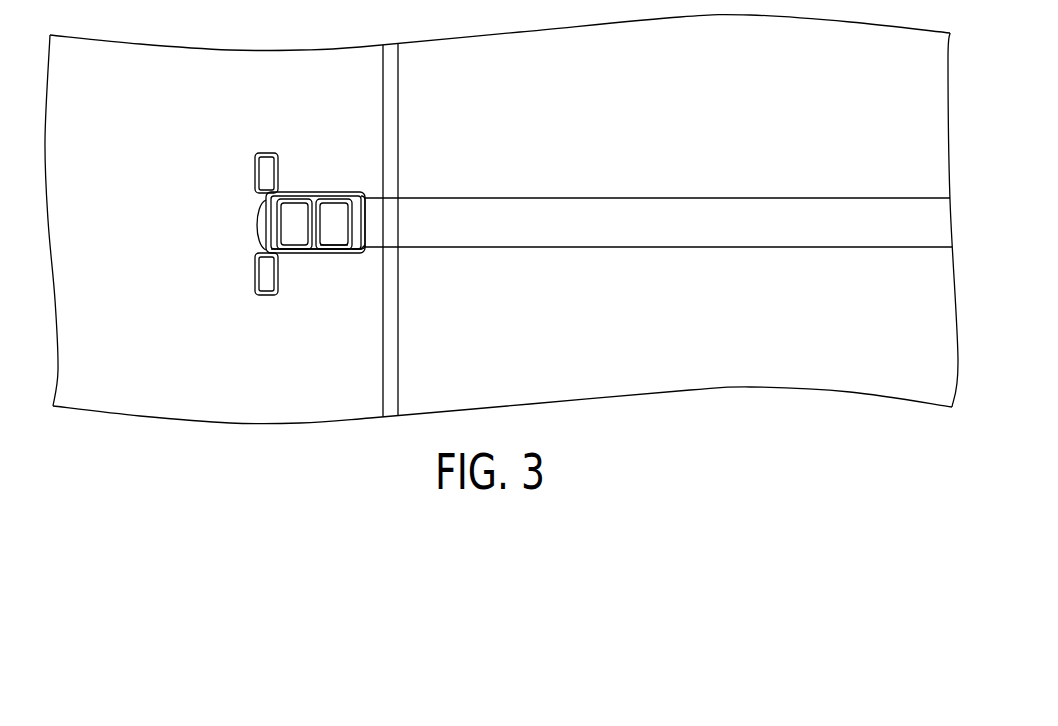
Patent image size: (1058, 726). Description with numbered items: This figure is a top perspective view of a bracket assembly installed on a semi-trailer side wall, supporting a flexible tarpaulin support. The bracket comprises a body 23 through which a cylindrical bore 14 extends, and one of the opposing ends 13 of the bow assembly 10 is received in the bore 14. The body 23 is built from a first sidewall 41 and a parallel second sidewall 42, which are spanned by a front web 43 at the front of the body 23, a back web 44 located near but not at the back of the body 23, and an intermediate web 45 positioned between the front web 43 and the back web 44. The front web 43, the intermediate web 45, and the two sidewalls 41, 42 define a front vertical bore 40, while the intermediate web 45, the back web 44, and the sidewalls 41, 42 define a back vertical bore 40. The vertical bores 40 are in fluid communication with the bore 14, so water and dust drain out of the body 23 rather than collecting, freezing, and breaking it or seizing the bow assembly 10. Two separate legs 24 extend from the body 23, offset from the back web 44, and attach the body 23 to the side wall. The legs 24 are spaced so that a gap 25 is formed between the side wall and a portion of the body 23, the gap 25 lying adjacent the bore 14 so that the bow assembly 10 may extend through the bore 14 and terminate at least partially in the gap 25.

The bow assembly 10 is at (628, 197).
The end 13 is at (298, 212).
The bore 14 is at (365, 222).
The body 23 is at (310, 254).
The legs 24 is at (262, 168).
The gap 25 is at (262, 252).
The vertical bore 40 is at (291, 240).
The first sidewall 41 is at (338, 192).
The second sidewall 42 is at (333, 249).
The front web 43 is at (365, 248).
The back web 44 is at (278, 192).
The intermediate web 45 is at (318, 192).